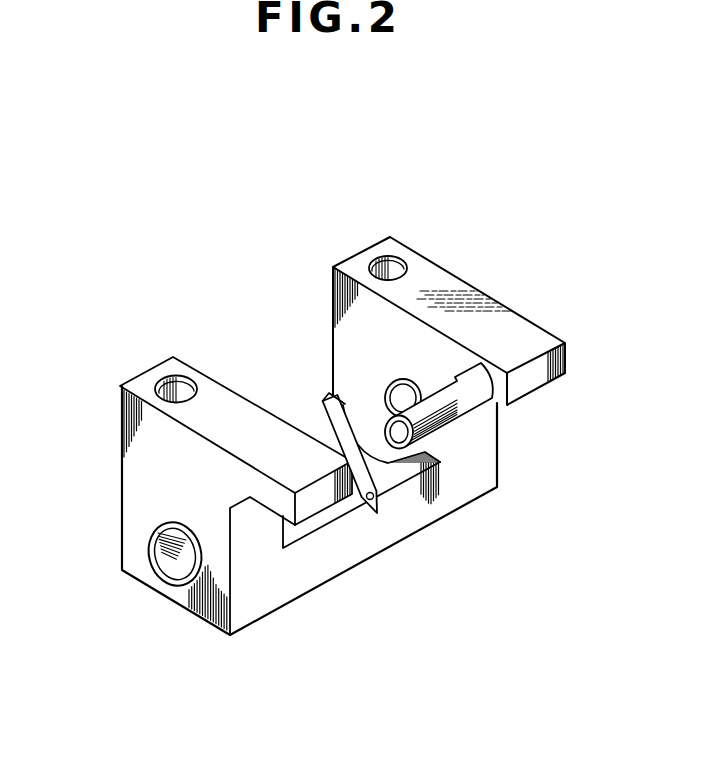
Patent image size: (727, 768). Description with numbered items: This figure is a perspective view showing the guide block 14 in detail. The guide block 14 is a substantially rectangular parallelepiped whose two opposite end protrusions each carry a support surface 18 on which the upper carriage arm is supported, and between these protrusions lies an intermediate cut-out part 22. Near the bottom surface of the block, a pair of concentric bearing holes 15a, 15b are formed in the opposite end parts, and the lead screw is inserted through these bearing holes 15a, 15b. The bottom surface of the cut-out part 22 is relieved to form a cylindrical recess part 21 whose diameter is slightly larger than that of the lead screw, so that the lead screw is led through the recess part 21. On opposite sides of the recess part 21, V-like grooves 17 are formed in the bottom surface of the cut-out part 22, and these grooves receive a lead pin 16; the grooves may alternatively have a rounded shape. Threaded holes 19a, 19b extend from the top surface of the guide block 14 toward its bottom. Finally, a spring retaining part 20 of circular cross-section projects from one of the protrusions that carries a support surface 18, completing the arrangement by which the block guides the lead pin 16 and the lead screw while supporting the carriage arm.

The guide block 14 is at (132, 467).
The bearing hole 15a is at (168, 581).
The bearing hole 15b is at (408, 387).
The lead pin 16 is at (300, 393).
The V-like groove 17 is at (372, 511).
The support surface 18 is at (505, 331).
The threaded hole 19a is at (160, 390).
The threaded hole 19b is at (372, 259).
The spring retaining part 20 is at (463, 406).
The cylindrical recess part 21 is at (390, 466).
The cut-out part 22 is at (307, 352).